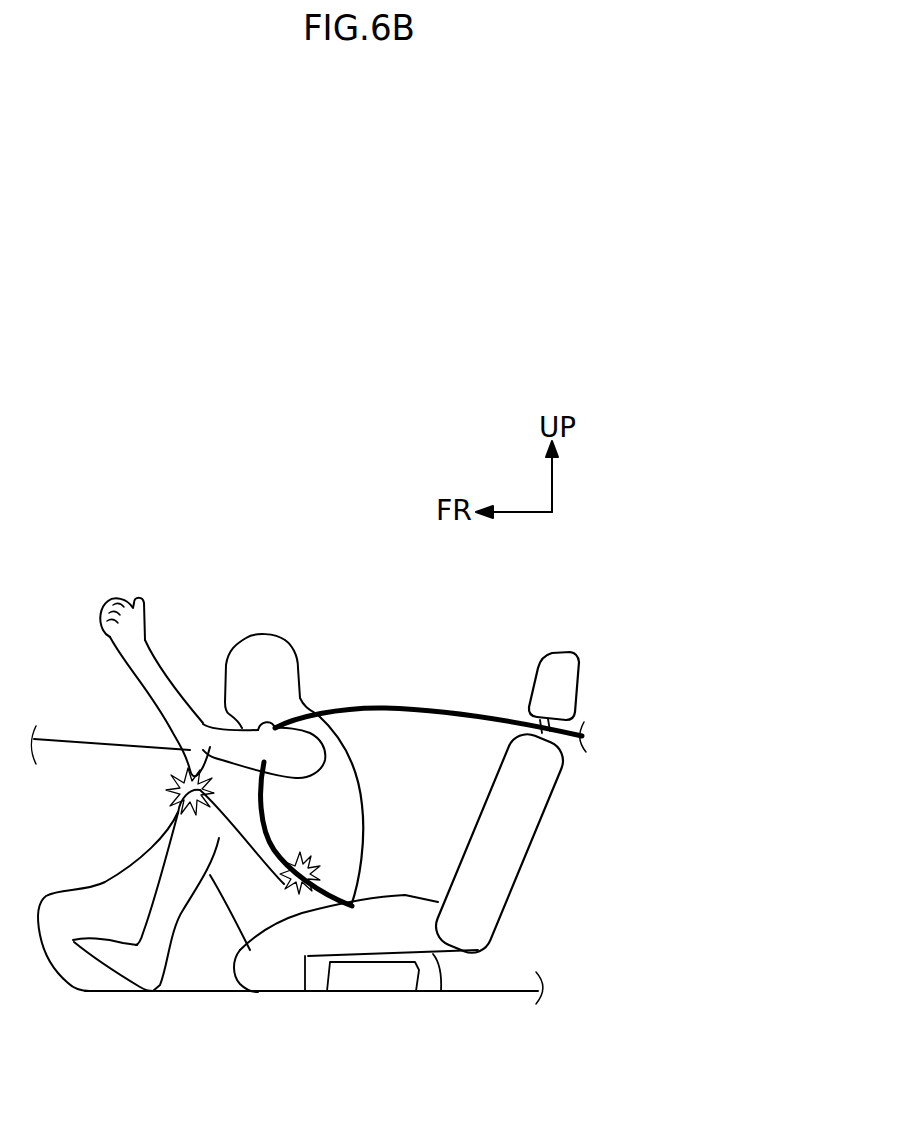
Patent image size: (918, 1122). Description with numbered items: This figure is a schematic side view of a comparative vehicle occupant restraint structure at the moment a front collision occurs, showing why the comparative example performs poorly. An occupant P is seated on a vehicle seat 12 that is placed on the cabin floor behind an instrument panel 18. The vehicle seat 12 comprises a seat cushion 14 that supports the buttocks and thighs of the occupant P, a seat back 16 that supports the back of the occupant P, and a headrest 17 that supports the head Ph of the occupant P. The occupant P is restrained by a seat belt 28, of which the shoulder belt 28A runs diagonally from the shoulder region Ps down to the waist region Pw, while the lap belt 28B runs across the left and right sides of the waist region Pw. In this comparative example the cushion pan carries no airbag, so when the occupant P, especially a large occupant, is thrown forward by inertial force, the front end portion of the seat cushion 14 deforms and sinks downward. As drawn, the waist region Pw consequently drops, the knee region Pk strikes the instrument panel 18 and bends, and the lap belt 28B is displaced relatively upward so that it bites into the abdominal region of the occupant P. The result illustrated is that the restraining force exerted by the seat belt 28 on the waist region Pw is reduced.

The vehicle seat 12 is at (460, 845).
The seat cushion 14 is at (280, 963).
The seat back 16 is at (517, 837).
The headrest 17 is at (608, 687).
The instrument panel 18 is at (210, 747).
The seat belt 28 is at (423, 841).
The shoulder belt 28A is at (414, 709).
The lap belt 28B is at (320, 905).
The occupant P is at (246, 804).
The head Ph is at (250, 652).
The shoulder region Ps is at (320, 731).
The knee region Pk is at (165, 803).
The waist region Pw is at (298, 893).